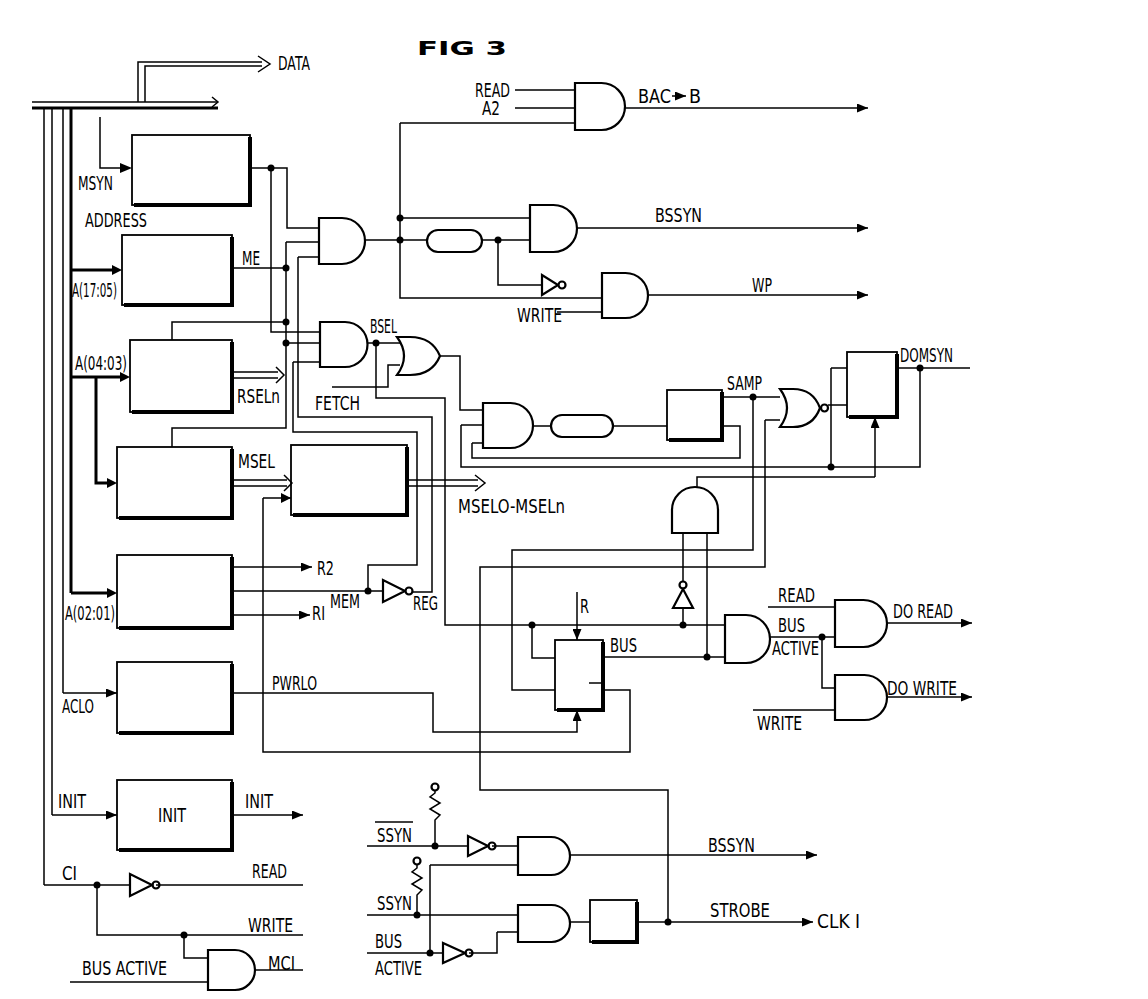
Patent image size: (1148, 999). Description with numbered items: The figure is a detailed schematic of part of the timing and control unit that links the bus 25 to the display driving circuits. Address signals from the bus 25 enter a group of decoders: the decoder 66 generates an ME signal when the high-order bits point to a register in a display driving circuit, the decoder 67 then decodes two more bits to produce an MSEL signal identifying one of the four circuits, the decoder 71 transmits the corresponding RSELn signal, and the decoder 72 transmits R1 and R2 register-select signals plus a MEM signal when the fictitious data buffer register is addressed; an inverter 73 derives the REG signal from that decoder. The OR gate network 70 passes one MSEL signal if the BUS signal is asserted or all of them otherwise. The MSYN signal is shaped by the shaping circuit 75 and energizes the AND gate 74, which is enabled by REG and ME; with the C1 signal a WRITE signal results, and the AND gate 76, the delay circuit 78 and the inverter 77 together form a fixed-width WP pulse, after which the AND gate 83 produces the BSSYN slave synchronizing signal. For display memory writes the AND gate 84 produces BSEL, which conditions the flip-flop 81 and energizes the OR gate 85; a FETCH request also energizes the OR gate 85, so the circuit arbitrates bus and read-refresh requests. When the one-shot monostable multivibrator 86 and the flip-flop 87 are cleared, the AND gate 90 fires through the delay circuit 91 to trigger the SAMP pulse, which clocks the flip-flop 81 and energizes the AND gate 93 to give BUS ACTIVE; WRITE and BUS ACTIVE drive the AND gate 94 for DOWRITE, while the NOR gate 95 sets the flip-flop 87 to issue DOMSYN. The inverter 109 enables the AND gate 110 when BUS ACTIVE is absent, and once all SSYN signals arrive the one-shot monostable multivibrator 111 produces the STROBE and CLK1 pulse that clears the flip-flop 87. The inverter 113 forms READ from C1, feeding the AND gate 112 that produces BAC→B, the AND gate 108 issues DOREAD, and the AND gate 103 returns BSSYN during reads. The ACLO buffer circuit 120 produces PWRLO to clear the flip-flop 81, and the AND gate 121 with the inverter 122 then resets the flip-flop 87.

The bus 25 is at (72, 102).
The shaping circuit 75 is at (243, 135).
The decoder 66 is at (197, 235).
The decoder 71 is at (136, 340).
The decoder 67 is at (139, 447).
The decoder 72 is at (200, 555).
The OR gate network 70 is at (313, 516).
The inverter 73 is at (390, 603).
The AND gate 74 is at (342, 241).
The delay circuit 78 is at (454, 241).
The inverter 77 is at (549, 268).
The AND gate 83 is at (553, 228).
The AND gate 76 is at (625, 295).
The AND gate 112 is at (600, 106).
The AND gate 84 is at (344, 344).
The OR gate 85 is at (418, 356).
The AND gate 90 is at (508, 425).
The delay circuit 91 is at (576, 415).
The one-shot monostable multivibrator 86 is at (676, 390).
The NOR gate 95 is at (804, 408).
The flip-flop 87 is at (860, 352).
The AND gate 121 is at (695, 510).
The inverter 122 is at (679, 586).
The flip-flop 81 is at (579, 675).
The AND gate 93 is at (747, 639).
The AND gate 108 is at (861, 623).
The AND gate 94 is at (861, 697).
The ACLO buffer circuit 120 is at (193, 662).
The inverter 113 is at (141, 897).
The inverter 109 is at (456, 964).
The AND gate 103 is at (544, 856).
The AND gate 110 is at (544, 923).
The one-shot monostable multivibrator 111 is at (601, 900).